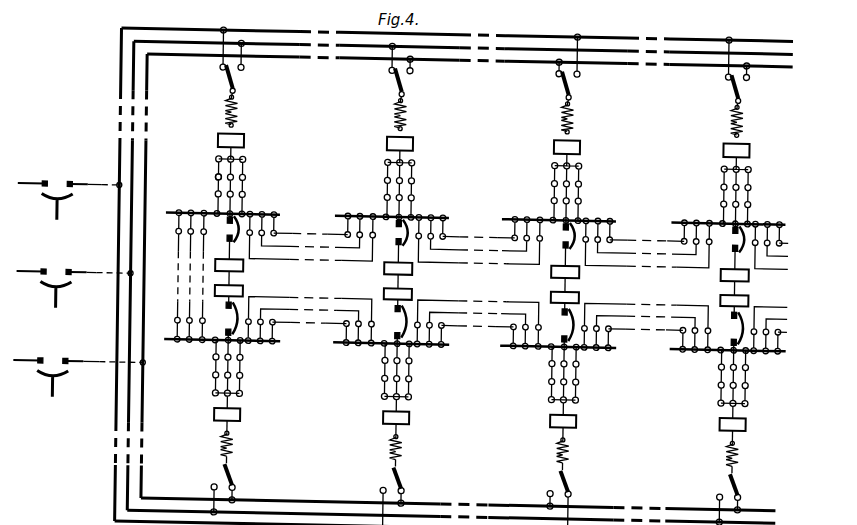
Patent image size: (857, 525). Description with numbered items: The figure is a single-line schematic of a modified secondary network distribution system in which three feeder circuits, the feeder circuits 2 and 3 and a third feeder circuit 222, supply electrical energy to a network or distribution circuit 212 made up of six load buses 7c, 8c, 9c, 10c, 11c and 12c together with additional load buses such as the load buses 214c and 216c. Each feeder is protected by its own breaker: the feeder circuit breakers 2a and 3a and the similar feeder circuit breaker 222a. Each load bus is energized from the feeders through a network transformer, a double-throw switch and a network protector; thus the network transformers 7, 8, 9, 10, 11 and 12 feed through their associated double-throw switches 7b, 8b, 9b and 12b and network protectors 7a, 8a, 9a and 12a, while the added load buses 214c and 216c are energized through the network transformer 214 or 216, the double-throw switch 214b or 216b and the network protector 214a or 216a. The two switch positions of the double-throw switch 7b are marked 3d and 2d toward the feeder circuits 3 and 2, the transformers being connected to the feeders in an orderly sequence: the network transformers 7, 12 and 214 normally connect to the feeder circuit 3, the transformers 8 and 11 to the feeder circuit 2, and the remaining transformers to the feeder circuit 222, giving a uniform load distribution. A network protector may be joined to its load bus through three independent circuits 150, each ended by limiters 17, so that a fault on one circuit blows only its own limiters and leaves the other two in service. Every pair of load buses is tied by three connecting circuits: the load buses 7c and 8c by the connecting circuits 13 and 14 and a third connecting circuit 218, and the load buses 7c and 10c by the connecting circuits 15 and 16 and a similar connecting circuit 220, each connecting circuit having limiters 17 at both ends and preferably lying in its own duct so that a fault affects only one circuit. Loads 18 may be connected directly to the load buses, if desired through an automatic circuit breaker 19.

The feeder circuit 2 is at (105, 271).
The feeder circuit breaker 2a is at (56, 296).
The switch terminal 2d is at (243, 68).
The feeder circuit 3 is at (104, 190).
The feeder circuit breaker 3a is at (55, 208).
The switch terminal 3d is at (220, 66).
The network transformer 7 is at (240, 105).
The network protector 7a is at (246, 139).
The double-throw switch 7b is at (236, 82).
The load bus 7c is at (282, 211).
The network transformer 8 is at (410, 115).
The network protector 8a is at (414, 139).
The double-throw switch 8b is at (408, 83).
The load bus 8c is at (452, 211).
The network transformer 9 is at (583, 116).
The network protector 9a is at (583, 140).
The double-throw switch 9b is at (578, 84).
The load bus 9c is at (619, 211).
The network transformer 10 is at (238, 437).
The load bus 10c is at (284, 340).
The network transformer 11 is at (406, 446).
The load bus 11c is at (454, 340).
The network transformer 12 is at (577, 454).
The network protector 12a is at (582, 416).
The double-throw switch 12b is at (576, 488).
The load bus 12c is at (615, 340).
The connecting circuit 13 is at (284, 259).
The connecting circuit 14 is at (311, 247).
The connecting circuit 15 is at (180, 240).
The connecting circuit 16 is at (192, 268).
The limiters 17 is at (219, 157).
The loads 18 is at (414, 271).
The automatic circuit breaker 19 is at (390, 321).
The circuits 150 is at (217, 176).
The network circuit 212 is at (646, 302).
The network transformer 214 is at (748, 123).
The network protector 214a is at (751, 150).
The double-throw switch 214b is at (742, 88).
The load bus 214c is at (706, 211).
The network transformer 216 is at (721, 441).
The network protector 216a is at (724, 413).
The double-throw switch 216b is at (728, 482).
The load bus 216c is at (718, 370).
The connecting circuit 218 is at (342, 234).
The connecting circuit 220 is at (205, 290).
The feeder circuit 222 is at (109, 361).
The feeder circuit breaker 222a is at (56, 377).